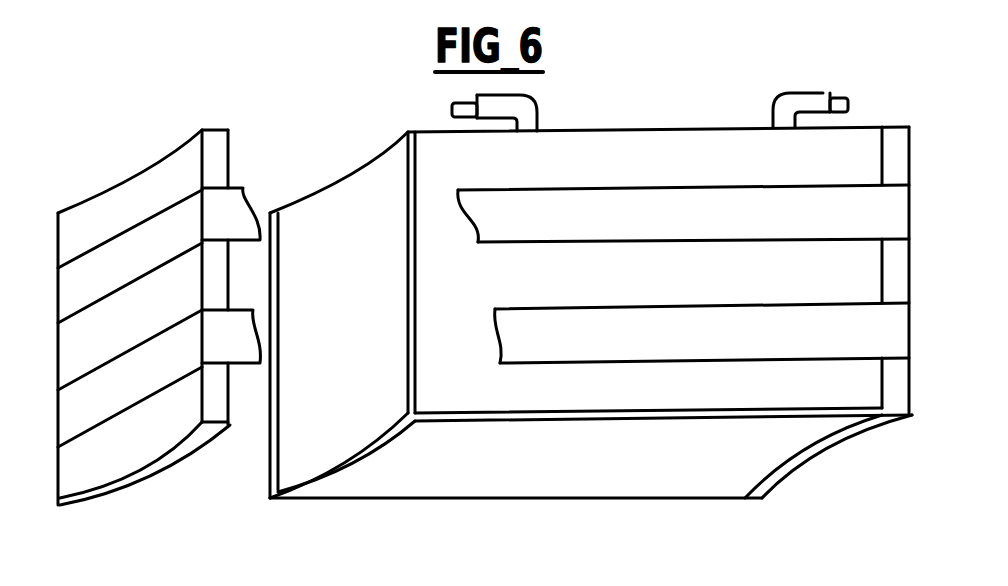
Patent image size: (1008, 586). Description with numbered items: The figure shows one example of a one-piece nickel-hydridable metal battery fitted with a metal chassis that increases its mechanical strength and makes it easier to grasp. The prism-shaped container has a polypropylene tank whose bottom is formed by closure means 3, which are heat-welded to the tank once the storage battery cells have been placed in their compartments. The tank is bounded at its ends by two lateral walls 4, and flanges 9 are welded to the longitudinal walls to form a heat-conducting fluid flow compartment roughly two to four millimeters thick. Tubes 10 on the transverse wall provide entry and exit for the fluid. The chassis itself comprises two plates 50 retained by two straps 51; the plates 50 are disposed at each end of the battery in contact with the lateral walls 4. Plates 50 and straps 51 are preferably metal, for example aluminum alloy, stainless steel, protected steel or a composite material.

The closure means 3 is at (417, 480).
The lateral wall 4 is at (348, 207).
The flange 9 is at (427, 157).
The tube 10 is at (528, 104).
The plate 50 is at (158, 183).
The strap 51 is at (232, 203).